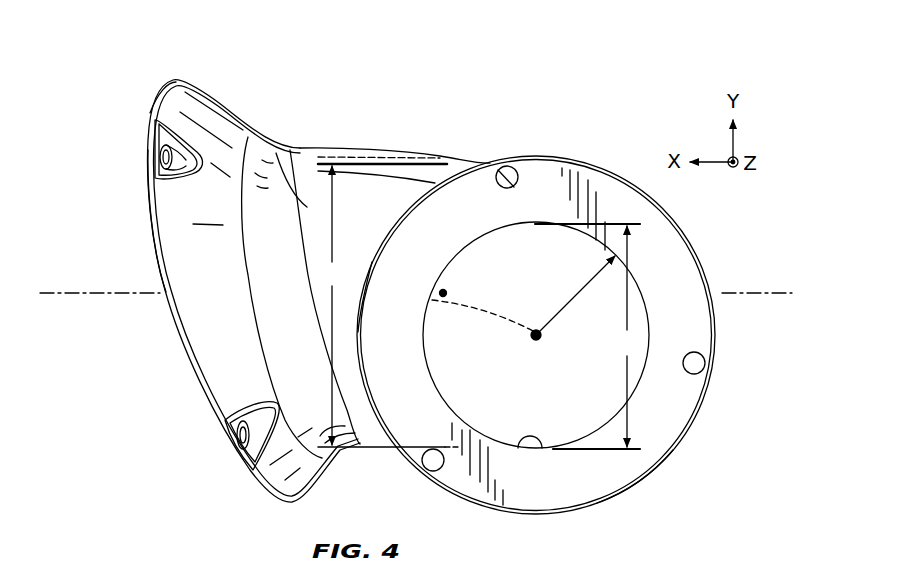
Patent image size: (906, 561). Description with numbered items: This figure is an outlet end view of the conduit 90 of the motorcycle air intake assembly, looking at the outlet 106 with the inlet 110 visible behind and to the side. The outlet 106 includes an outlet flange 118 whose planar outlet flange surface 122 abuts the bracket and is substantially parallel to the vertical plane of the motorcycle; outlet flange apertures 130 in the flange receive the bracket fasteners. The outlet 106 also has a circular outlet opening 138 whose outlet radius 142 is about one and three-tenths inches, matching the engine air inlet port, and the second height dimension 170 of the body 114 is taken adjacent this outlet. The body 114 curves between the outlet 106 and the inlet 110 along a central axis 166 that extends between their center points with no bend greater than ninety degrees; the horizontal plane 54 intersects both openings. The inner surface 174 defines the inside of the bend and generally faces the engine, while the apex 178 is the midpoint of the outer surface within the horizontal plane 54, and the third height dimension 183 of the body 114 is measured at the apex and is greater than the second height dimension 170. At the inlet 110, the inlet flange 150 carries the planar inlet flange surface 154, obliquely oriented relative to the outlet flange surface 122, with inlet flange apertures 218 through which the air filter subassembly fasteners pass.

The horizontal plane 54 is at (740, 292).
The conduit 90 is at (562, 318).
The outlet 106 is at (680, 466).
The inlet 110 is at (166, 418).
The body 114 is at (390, 150).
The outlet flange 118 is at (586, 159).
The planar outlet flange surface 122 is at (654, 248).
The outlet flange apertures 130 is at (514, 170).
The outlet opening 138 is at (518, 449).
The outlet radius 142 is at (573, 303).
The inlet flange 150 is at (178, 81).
The planar inlet flange surface 154 is at (152, 227).
The central axis 166 is at (152, 298).
The second height dimension 170 is at (590, 336).
The inner surface 174 is at (283, 152).
The apex 178 is at (443, 292).
The third height dimension 183 is at (385, 305).
The inlet flange apertures 218 is at (162, 166).